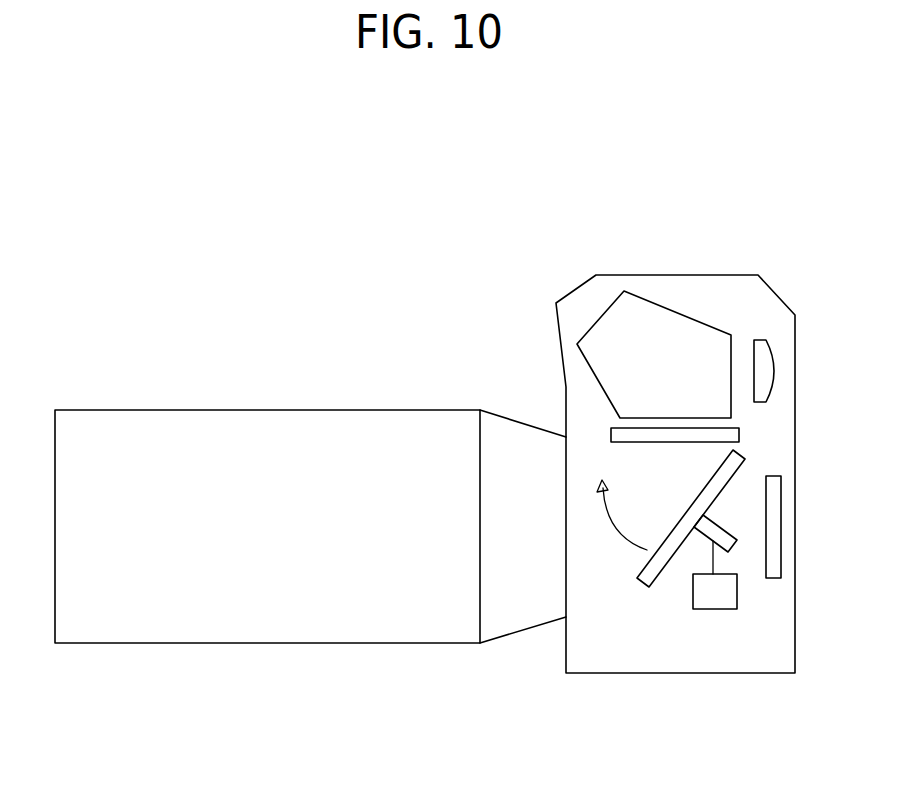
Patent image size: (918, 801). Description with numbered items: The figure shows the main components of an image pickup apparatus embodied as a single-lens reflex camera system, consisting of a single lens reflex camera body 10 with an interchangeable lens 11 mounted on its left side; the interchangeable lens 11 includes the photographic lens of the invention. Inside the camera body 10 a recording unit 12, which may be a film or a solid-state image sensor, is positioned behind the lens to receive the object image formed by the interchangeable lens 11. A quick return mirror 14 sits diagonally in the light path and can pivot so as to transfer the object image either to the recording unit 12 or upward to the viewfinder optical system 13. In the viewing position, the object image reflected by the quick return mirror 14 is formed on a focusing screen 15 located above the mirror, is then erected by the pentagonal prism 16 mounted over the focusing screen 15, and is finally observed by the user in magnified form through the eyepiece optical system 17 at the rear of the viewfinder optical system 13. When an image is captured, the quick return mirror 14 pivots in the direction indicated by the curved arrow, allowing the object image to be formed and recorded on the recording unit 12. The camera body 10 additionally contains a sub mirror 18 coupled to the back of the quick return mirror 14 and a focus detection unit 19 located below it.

The single lens reflex camera body 10 is at (758, 657).
The interchangeable lens 11 is at (247, 635).
The recording unit 12 is at (772, 551).
The viewfinder optical system 13 is at (802, 183).
The quick return mirror 14 is at (648, 587).
The focusing screen 15 is at (637, 433).
The pentagonal prism 16 is at (659, 318).
The eyepiece optical system 17 is at (762, 337).
The sub mirror 18 is at (737, 533).
The focus detection unit 19 is at (714, 609).